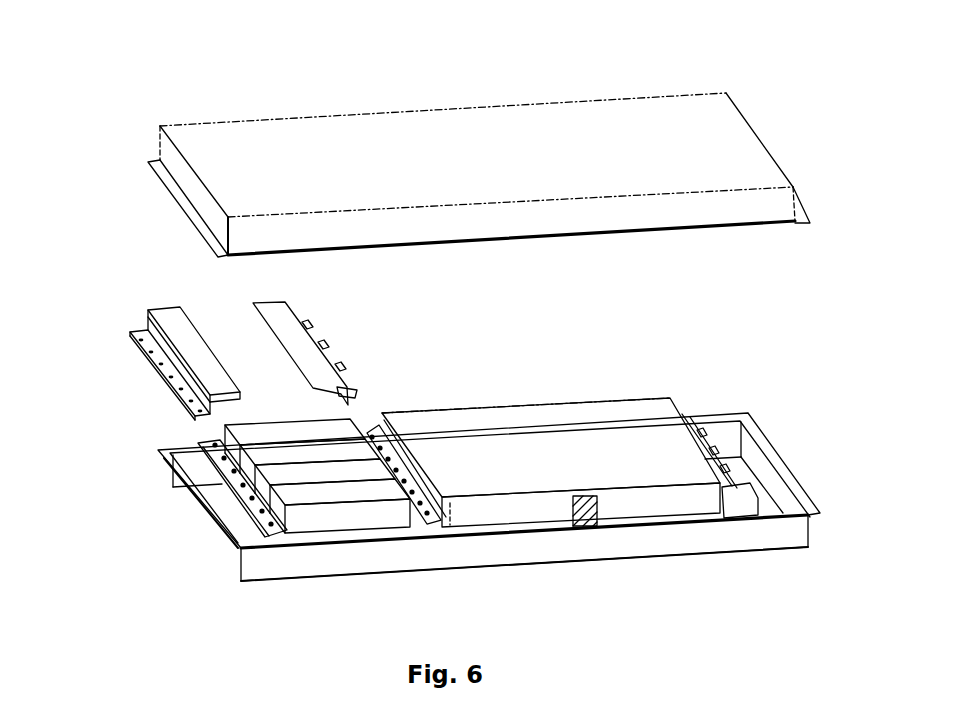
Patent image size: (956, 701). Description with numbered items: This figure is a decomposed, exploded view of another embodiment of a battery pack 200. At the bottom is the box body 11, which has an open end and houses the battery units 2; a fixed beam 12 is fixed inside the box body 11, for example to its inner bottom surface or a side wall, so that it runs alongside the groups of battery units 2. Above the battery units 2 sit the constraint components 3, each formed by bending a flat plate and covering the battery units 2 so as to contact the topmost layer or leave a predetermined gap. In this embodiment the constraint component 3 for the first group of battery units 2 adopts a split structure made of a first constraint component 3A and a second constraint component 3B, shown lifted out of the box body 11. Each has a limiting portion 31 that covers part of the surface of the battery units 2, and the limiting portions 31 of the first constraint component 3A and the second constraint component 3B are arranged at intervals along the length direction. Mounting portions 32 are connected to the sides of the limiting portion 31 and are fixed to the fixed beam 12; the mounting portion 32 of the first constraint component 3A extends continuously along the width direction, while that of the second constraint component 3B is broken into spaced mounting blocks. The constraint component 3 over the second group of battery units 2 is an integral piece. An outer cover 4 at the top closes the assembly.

The battery pack 200 is at (443, 31).
The outer cover 4 is at (245, 135).
The first constraint component 3A is at (146, 302).
The second constraint component 3B is at (341, 350).
The limiting portion 31 is at (208, 370).
The mounting portion 32 is at (148, 352).
The constraint component 3 is at (603, 413).
The battery unit 2 is at (340, 522).
The box body 11 is at (617, 551).
The fixed beam 12 is at (232, 513).